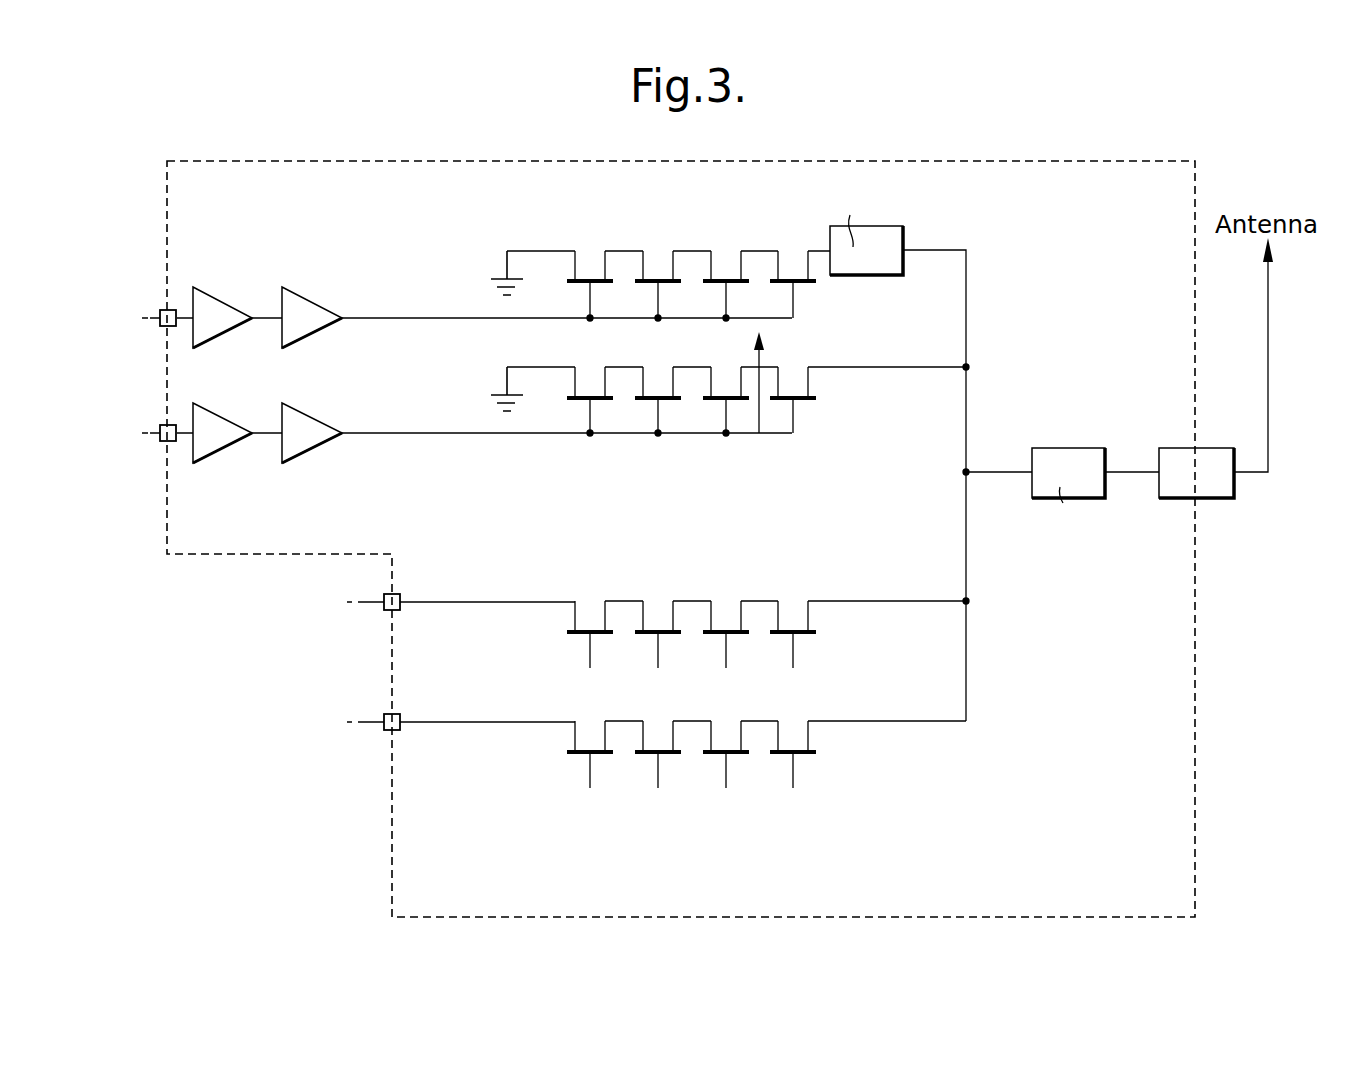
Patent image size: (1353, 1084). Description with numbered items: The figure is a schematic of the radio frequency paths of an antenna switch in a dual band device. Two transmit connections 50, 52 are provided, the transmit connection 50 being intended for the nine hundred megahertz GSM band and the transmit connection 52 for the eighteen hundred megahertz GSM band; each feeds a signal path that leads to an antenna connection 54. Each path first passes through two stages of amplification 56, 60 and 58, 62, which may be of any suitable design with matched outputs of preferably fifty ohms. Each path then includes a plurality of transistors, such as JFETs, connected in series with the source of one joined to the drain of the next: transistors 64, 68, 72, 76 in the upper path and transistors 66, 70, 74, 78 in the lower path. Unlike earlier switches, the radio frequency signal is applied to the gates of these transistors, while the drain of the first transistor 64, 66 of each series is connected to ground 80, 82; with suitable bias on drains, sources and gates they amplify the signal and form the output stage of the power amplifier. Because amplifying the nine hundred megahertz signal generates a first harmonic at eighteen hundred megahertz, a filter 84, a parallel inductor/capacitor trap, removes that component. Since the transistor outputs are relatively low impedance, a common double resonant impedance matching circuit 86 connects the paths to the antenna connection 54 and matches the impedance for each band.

The transmit connection 50 is at (160, 313).
The transmit connection 52 is at (160, 440).
The antenna connection 54 is at (1213, 480).
The stage of amplification 56 is at (222, 312).
The stage of amplification 58 is at (213, 442).
The stage of amplification 60 is at (302, 310).
The stage of amplification 62 is at (307, 440).
The transistor 64 is at (602, 260).
The transistor 66 is at (598, 400).
The transistor 68 is at (670, 260).
The transistor 70 is at (662, 400).
The transistor 72 is at (739, 260).
The transistor 74 is at (730, 400).
The transistor 76 is at (807, 260).
The transistor 78 is at (800, 400).
The ground 80 is at (505, 278).
The ground 82 is at (505, 394).
The filter 84 is at (872, 265).
The impedance matching circuit 86 is at (1068, 462).